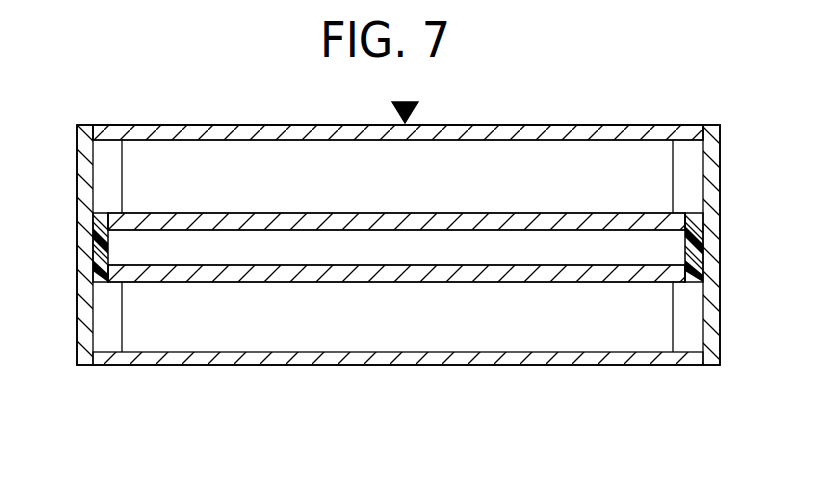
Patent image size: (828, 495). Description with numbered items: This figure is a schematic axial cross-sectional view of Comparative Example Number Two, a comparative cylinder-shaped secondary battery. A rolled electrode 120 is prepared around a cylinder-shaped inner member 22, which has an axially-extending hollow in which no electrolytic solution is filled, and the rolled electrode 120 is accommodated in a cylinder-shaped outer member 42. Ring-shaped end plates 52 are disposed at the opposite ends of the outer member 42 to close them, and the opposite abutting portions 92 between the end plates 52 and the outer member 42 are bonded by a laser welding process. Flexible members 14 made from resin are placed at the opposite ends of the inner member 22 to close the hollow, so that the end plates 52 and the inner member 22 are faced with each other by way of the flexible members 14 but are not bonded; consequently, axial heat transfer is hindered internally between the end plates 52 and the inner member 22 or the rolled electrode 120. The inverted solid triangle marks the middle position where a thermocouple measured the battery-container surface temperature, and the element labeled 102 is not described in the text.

The abutting portions 92 is at (94, 127).
The cylinder-shaped outer member 42 is at (658, 130).
The rolled electrode 120 is at (442, 190).
The cylinder-shaped inner member 22 is at (650, 214).
The lower substrate 102 is at (98, 276).
The end plates 52 is at (78, 239).
The flexible members 14 is at (102, 268).